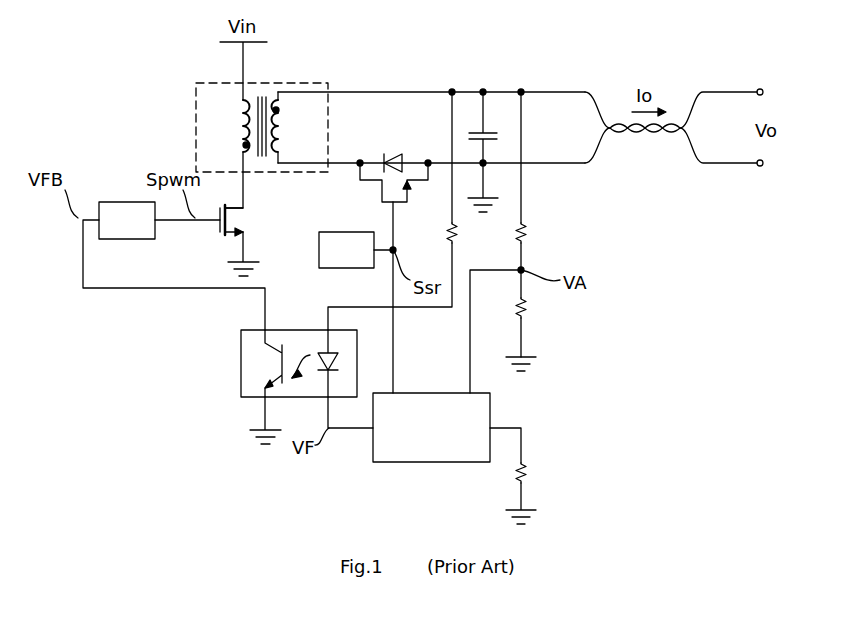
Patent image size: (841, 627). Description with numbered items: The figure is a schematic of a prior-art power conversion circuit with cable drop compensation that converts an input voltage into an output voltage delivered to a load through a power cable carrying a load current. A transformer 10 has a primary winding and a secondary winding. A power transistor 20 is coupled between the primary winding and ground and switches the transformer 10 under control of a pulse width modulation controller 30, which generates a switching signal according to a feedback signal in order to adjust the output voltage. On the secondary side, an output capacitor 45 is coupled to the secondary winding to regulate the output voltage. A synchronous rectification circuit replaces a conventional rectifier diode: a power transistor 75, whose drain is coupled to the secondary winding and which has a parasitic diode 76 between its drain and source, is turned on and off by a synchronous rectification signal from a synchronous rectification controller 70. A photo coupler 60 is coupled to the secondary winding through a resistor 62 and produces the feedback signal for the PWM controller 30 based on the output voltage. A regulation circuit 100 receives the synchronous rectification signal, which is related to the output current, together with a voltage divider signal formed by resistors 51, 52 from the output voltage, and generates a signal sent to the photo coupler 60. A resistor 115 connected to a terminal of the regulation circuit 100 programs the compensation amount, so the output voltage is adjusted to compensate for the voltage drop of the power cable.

The transformer 10 is at (262, 117).
The power transistor 20 is at (229, 211).
The pulse width modulation (PWM) controller 30 is at (138, 231).
The output capacitor 45 is at (492, 152).
The resistor 51 is at (535, 234).
The resistor 52 is at (535, 309).
The photo coupler 60 is at (299, 353).
The resistor 62 is at (466, 234).
The synchronous rectification controller 70 is at (358, 261).
The power transistor 75 is at (391, 184).
The parasitic diode 76 is at (393, 151).
The regulation circuit 100 is at (441, 435).
The resistor 115 is at (544, 474).